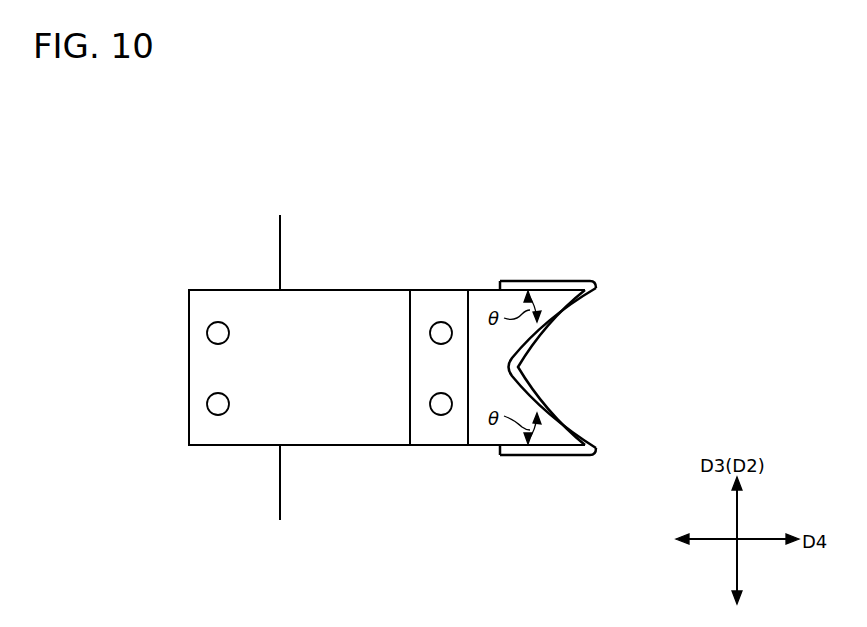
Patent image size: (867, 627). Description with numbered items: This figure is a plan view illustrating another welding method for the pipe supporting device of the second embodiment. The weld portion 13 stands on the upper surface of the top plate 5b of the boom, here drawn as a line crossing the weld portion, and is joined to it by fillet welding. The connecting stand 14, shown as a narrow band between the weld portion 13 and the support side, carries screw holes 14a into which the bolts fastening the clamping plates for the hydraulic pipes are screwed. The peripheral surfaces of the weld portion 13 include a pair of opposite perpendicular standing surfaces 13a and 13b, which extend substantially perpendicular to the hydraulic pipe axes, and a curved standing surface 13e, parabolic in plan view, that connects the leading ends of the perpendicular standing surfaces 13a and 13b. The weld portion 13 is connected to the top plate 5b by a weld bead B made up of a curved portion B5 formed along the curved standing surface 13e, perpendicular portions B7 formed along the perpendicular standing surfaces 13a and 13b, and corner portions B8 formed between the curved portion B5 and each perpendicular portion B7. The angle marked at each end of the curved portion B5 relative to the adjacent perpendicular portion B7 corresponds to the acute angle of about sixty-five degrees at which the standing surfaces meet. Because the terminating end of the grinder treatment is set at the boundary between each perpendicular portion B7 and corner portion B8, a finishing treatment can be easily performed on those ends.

The top plate 5b is at (280, 231).
The weld portion 13 is at (200, 361).
The perpendicular standing surface 13a is at (485, 290).
The perpendicular standing surface 13b is at (478, 445).
The curved standing surface 13e is at (513, 366).
The connecting stand 14 is at (432, 302).
The screw hole 14a is at (434, 336).
The weld bead B is at (604, 362).
The curved portion B5 is at (548, 323).
The perpendicular portion B7 is at (538, 281).
The corner portion B8 is at (597, 283).